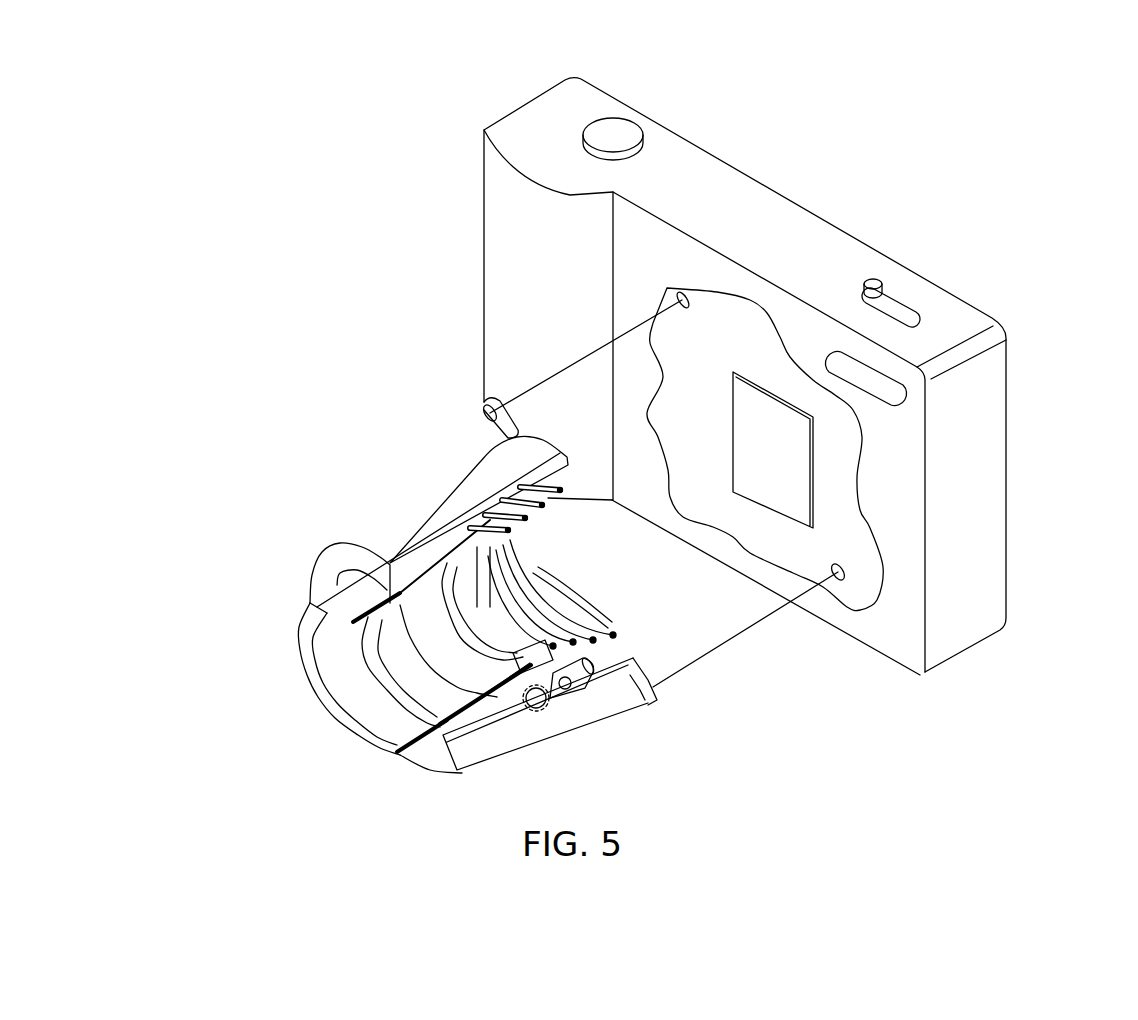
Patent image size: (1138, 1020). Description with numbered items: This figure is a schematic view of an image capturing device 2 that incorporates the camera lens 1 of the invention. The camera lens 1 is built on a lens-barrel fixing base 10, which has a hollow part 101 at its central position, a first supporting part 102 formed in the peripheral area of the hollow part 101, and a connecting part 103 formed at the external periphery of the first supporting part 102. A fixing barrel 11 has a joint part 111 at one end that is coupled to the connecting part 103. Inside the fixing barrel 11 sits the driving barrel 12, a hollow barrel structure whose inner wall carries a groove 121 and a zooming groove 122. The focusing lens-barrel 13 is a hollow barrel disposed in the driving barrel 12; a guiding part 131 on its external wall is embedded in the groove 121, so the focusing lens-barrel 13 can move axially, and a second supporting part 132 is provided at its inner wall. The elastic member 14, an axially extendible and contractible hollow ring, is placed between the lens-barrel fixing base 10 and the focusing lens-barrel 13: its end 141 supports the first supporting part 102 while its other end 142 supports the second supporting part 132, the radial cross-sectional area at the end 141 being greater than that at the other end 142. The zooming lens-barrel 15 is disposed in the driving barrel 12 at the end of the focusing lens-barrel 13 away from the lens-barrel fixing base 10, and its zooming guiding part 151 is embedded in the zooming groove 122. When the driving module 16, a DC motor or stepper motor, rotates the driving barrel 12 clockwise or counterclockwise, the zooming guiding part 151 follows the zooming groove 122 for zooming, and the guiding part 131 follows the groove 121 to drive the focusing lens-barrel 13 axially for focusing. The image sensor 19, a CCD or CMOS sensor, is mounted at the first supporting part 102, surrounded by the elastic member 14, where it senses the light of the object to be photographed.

The camera lens 1 is at (298, 562).
The image capturing device 2 is at (758, 202).
The lens-barrel fixing base 10 is at (747, 345).
The fixing barrel 11 is at (642, 682).
The driving barrel 12 is at (463, 758).
The focusing lens-barrel 13 is at (522, 725).
The elastic member 14 is at (615, 633).
The zooming lens-barrel 15 is at (303, 620).
The driving module 16 is at (588, 692).
The image sensor 19 is at (798, 478).
The hollow part 101 is at (835, 442).
The first supporting part 102 is at (837, 512).
The connecting part 103 is at (840, 575).
The joint part 111 is at (482, 408).
The groove 121 is at (488, 547).
The zooming groove 122 is at (427, 557).
The guiding part 131 is at (452, 556).
The second supporting part 132 is at (505, 545).
The end of the elastic member 141 is at (577, 592).
The another end of the elastic member 142 is at (550, 700).
The zooming guiding part 151 is at (388, 563).